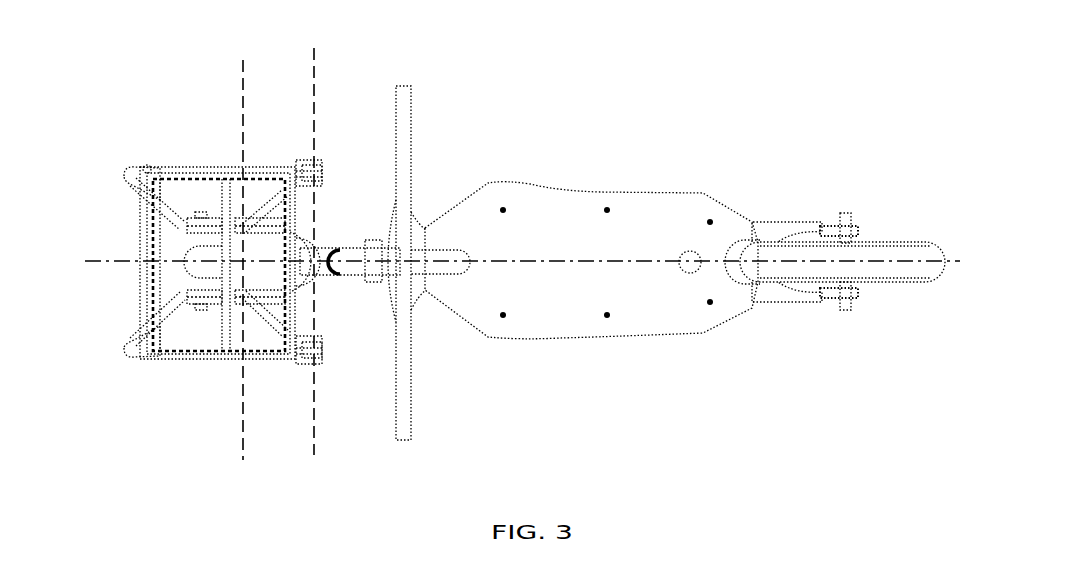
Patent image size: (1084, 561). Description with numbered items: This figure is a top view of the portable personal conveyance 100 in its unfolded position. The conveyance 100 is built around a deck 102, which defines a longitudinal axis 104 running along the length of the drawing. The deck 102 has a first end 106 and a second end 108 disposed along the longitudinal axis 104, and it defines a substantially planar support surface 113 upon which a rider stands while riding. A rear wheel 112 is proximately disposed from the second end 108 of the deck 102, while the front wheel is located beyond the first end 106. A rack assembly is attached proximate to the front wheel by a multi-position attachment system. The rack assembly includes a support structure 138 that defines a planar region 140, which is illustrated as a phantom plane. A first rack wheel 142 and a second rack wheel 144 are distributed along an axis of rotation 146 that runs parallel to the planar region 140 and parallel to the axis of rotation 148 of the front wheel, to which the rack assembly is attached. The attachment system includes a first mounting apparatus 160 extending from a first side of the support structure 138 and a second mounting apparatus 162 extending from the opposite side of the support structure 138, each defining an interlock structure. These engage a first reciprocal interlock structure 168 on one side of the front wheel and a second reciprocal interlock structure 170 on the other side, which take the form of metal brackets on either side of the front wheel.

The conveyance 100 is at (121, 76).
The deck 102 is at (591, 235).
The longitudinal axis 104 is at (136, 261).
The first end 106 is at (426, 309).
The second end 108 is at (742, 290).
The rear wheel 112 is at (869, 248).
The support surface 113 is at (570, 249).
The support structure 138 is at (222, 208).
The planar region 140 is at (212, 334).
The first rack wheel 142 is at (307, 360).
The second rack wheel 144 is at (310, 165).
The axis of rotation 146 is at (316, 87).
The axis of rotation 148 is at (243, 102).
The first mounting apparatus 160 is at (223, 323).
The second mounting apparatus 162 is at (144, 192).
The first reciprocal interlock structure 168 is at (248, 290).
The second reciprocal interlock structure 170 is at (245, 225).